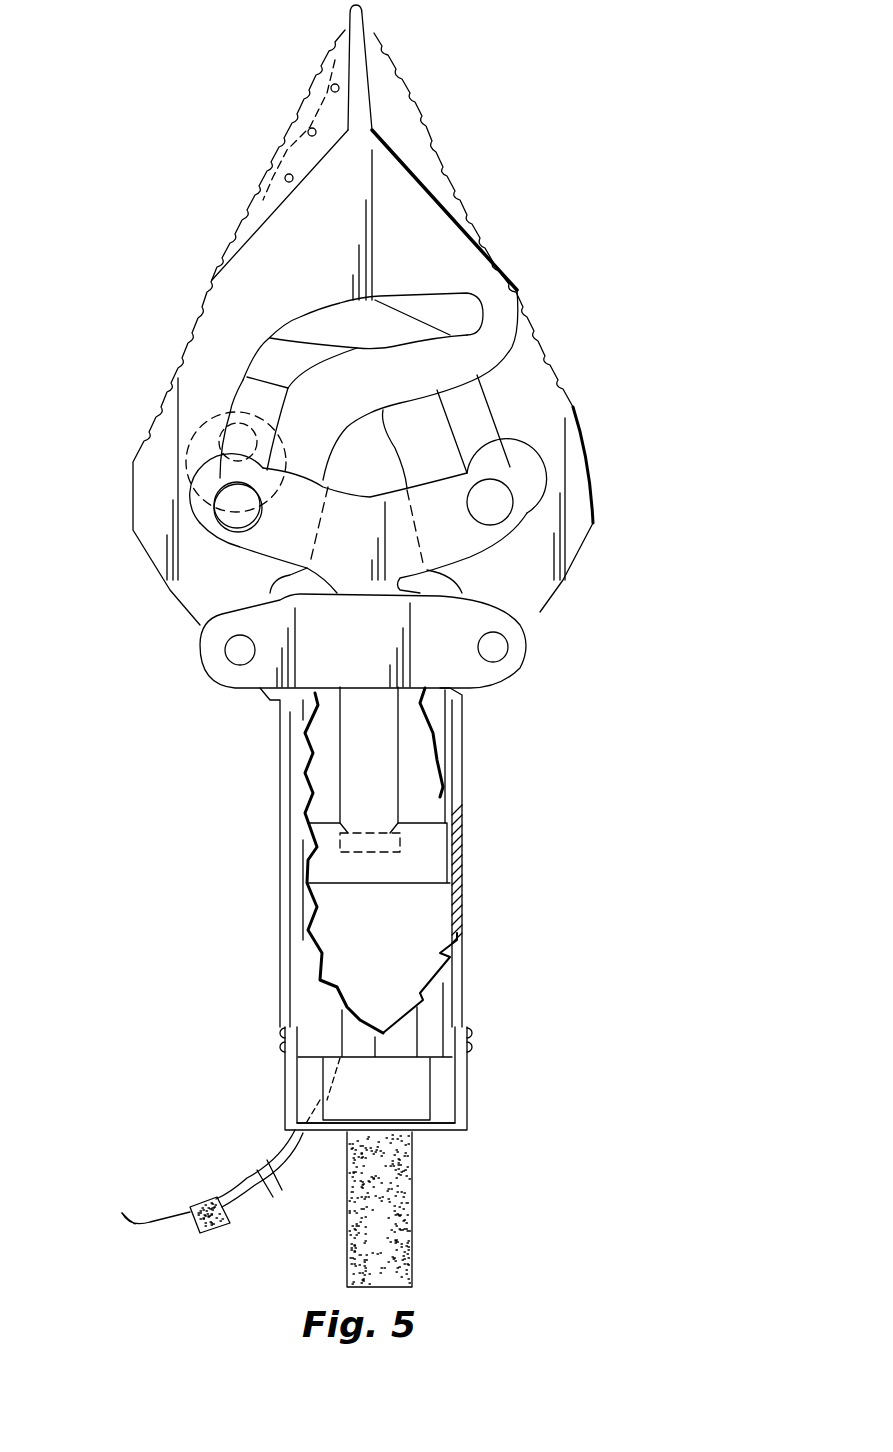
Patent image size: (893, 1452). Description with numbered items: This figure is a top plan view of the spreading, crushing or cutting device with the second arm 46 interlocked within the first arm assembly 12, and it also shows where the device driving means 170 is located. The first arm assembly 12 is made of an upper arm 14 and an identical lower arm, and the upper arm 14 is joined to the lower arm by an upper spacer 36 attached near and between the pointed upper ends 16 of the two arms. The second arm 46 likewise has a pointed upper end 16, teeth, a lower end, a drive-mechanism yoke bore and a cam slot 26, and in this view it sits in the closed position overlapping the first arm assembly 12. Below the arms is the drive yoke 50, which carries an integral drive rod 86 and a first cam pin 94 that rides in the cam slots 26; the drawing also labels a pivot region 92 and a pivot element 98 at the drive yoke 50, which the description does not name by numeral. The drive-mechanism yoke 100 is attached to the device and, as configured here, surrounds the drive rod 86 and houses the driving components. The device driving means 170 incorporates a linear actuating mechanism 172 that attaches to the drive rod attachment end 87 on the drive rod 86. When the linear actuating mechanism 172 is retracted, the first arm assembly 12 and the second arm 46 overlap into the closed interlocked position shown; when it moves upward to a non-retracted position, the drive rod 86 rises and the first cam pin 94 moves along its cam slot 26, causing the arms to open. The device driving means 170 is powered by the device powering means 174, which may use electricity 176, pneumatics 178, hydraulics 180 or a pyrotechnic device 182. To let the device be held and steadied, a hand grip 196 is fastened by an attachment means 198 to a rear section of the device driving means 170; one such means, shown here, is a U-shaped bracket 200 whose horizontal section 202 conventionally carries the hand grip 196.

The first arm assembly 12 is at (250, 156).
The upper arm 14 is at (253, 217).
The pointed upper end 16 is at (361, 13).
The cam slot 26 is at (463, 310).
The upper spacer 36 is at (330, 107).
The second arm 46 is at (523, 377).
The drive yoke 50 is at (518, 488).
The drive rod 86 is at (400, 577).
The drive rod attachment end 87 is at (400, 840).
The support 92 is at (193, 460).
The first cam pin 94 is at (230, 507).
The pivot pin 98 is at (225, 440).
The drive-mechanism yoke 100 is at (520, 653).
The device driving means 170 is at (293, 807).
The linear actuating mechanism 172 is at (423, 867).
The device powering means 174 is at (120, 1150).
The electricity 176 is at (170, 1184).
The pneumatics 178 is at (144, 1217).
The hydraulics 180 is at (124, 1240).
The pyrotechnic device 182 is at (96, 1256).
The hand grip 196 is at (387, 1227).
The attachment means 198 is at (463, 1075).
The U-shaped bracket 200 is at (466, 1086).
The horizontal section 202 is at (427, 1132).